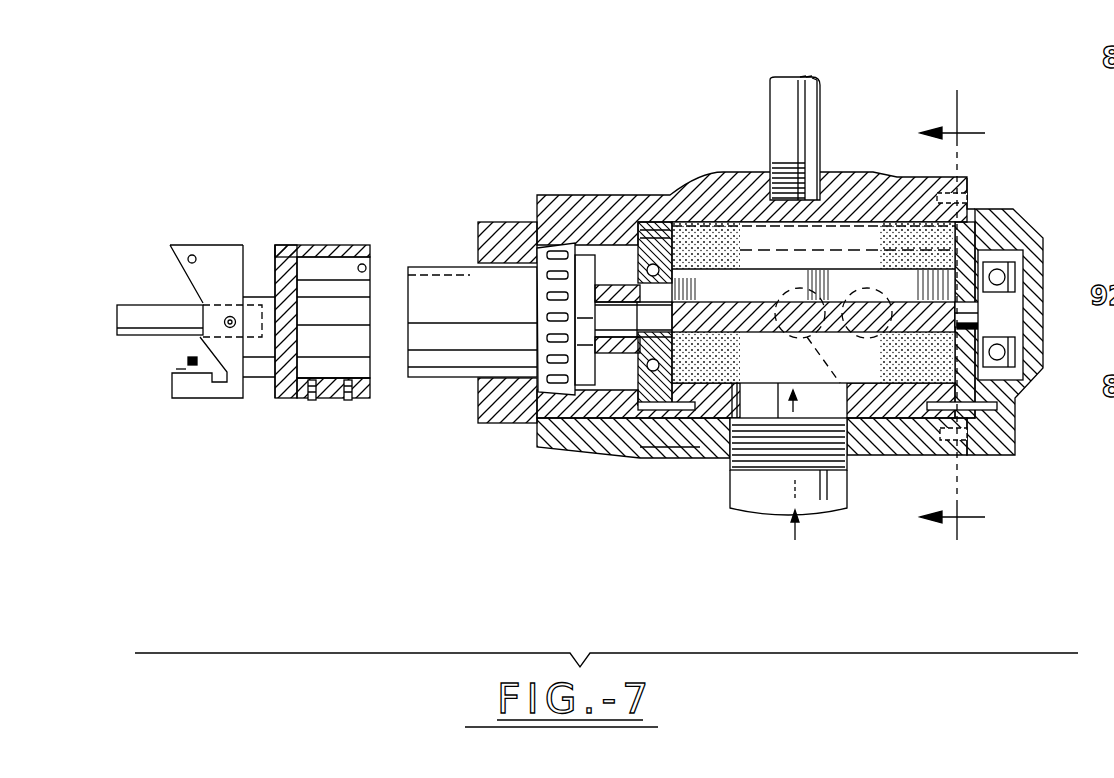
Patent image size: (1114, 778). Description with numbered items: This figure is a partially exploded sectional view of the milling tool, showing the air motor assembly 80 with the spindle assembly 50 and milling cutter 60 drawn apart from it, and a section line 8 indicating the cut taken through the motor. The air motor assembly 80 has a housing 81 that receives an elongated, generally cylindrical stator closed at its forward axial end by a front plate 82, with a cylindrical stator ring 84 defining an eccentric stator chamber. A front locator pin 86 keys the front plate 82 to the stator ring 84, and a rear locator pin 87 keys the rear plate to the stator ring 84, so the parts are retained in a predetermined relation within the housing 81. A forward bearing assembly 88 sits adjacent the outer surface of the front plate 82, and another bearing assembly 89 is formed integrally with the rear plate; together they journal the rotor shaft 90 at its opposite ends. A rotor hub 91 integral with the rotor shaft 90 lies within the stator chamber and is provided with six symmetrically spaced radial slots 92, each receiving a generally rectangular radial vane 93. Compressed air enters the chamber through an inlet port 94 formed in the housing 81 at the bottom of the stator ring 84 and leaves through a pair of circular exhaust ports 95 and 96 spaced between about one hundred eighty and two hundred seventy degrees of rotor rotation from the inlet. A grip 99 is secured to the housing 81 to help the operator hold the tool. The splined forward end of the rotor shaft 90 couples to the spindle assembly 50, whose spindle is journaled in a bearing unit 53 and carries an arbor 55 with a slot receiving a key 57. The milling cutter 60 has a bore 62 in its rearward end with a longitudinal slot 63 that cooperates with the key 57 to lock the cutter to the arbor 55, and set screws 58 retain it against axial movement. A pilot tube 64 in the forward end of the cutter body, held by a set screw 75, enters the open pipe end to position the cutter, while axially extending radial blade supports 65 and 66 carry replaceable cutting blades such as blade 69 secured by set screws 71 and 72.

The section line 8- 8 is at (968, 315).
The spindle assembly 50 is at (446, 265).
The bearing unit 53 is at (545, 250).
The arbor 55 is at (686, 343).
The key 57 is at (452, 266).
The set screws 58 is at (348, 402).
The milling cutter 60 is at (317, 232).
The bore 62 is at (373, 382).
The longitudinal slot 63 is at (374, 268).
The pilot tube 64 is at (145, 305).
The blade support 65 is at (185, 246).
The blade support 66 is at (203, 395).
The cutting blade 69 is at (182, 368).
The set screw 71 is at (192, 255).
The set screw 72 is at (182, 352).
The set screw 75 is at (232, 330).
The air motor assembly 80 is at (684, 170).
The housing 81 is at (746, 176).
The front plate 82 is at (640, 444).
The stator ring 84 is at (838, 221).
The front locator pin 86 is at (660, 410).
The rear locator pin 87 is at (993, 408).
The forward bearing assembly 88 is at (638, 228).
The bearing assembly 89 is at (1000, 352).
The rotor shaft 90 is at (640, 262).
The rotor hub 91 is at (893, 300).
The radial slots 92 is at (718, 296).
The radial vane 93 is at (775, 373).
The inlet port 94 is at (757, 405).
The exhaust port 95 is at (860, 425).
The exhaust port 96 is at (838, 337).
The grip 99 is at (808, 78).